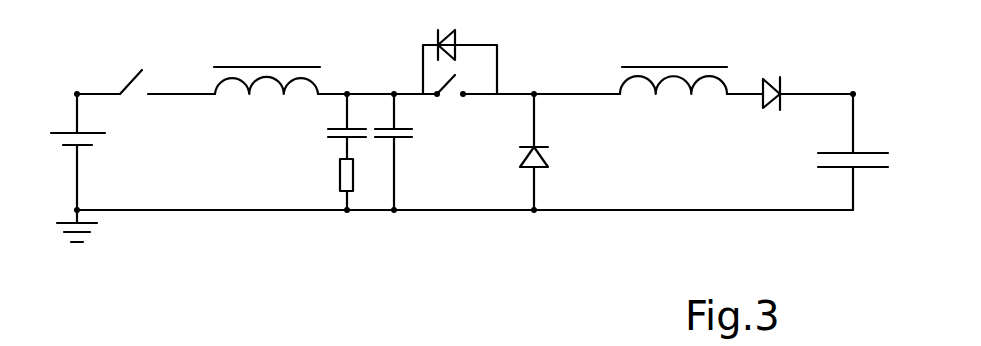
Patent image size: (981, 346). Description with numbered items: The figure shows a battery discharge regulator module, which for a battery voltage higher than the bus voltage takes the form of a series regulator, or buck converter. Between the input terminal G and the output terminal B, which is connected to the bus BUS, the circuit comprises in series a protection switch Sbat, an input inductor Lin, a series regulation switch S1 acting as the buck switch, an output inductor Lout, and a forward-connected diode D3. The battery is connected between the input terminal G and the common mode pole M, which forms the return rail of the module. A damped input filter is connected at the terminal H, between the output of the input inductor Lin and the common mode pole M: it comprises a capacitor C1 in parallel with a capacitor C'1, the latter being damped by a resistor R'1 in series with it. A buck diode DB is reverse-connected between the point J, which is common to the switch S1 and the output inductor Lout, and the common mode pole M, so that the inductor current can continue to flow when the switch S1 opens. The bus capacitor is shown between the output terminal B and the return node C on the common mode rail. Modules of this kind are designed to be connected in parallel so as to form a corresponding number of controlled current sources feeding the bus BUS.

The input terminal G is at (70, 98).
The common mode pole M is at (78, 203).
The protection switch Sbat is at (142, 65).
The input inductor Lin is at (267, 66).
The terminal H is at (372, 79).
The capacitor C'1 is at (332, 126).
The resistor R'1 is at (330, 183).
The capacitor C1 is at (404, 152).
The series regulation switch S1 is at (460, 81).
The point common to S1 and Lout J is at (536, 78).
The buck diode DB is at (555, 152).
The output inductor Lout is at (673, 66).
The forward-connected diode D3 is at (781, 76).
The output terminal B is at (873, 89).
The bus BUS is at (853, 127).
The bus negative node C is at (872, 194).